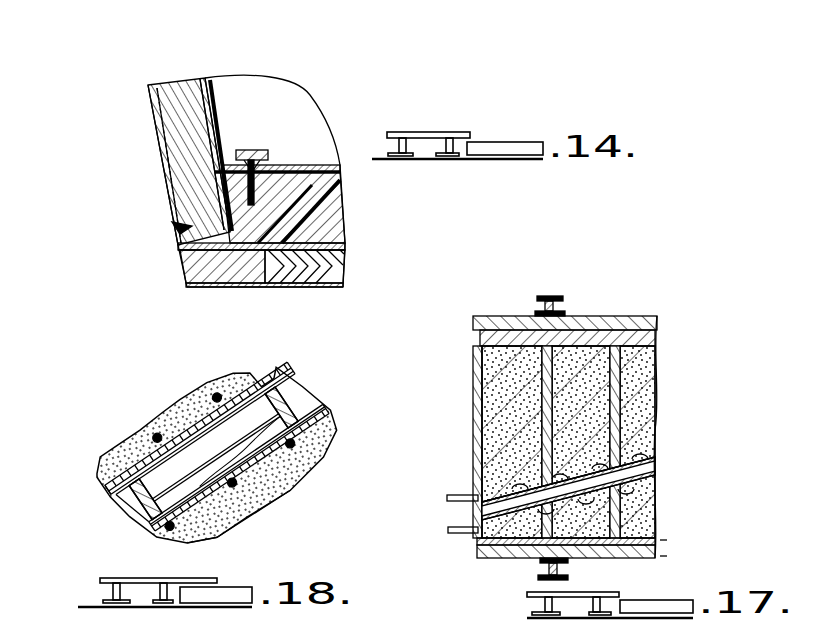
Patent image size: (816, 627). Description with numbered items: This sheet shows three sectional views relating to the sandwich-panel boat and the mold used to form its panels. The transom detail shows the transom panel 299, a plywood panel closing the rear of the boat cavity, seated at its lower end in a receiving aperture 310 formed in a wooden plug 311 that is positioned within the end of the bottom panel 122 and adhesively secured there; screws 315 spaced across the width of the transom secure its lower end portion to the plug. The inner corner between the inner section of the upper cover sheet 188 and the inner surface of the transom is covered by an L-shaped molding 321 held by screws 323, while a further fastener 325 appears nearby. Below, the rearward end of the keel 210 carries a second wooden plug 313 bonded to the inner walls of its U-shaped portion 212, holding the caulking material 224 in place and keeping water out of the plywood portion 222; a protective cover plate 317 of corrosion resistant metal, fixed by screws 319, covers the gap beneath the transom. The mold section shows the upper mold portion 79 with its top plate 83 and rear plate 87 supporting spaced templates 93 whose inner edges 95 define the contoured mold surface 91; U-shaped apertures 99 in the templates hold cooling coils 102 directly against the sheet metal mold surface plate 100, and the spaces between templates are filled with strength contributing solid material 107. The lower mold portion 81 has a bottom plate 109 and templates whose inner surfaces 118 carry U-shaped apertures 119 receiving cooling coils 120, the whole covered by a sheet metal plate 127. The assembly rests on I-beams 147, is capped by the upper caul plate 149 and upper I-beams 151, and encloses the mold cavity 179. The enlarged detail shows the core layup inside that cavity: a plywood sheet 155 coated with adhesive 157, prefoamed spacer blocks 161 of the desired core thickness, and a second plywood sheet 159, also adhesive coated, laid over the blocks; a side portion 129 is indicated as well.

In FIG. 14, the transom panel 299 is at (173, 79).
In FIG. 14, the L-shaped molding 321 is at (213, 92).
In FIG. 14, the screws 323 is at (222, 112).
In FIG. 14, the inner wall skin 325 is at (222, 135).
In FIG. 14, the wooden plug 311 is at (263, 164).
In FIG. 14, the upper cover sheet 188 is at (311, 170).
In FIG. 14, the receiving aperture 310 is at (202, 187).
In FIG. 14, the screws 315 is at (178, 205).
In FIG. 14, the screws 319 is at (197, 233).
In FIG. 14, the protective cover plate 317 is at (183, 249).
In FIG. 14, the wooden plug 313 is at (188, 277).
In FIG. 14, the U-shaped portion 212 is at (291, 291).
In FIG. 14, the bottom panel 122 is at (323, 193).
In FIG. 14, the caulking material 224 is at (347, 252).
In FIG. 14, the plywood portion 222 is at (344, 272).
In FIG. 14, the keel 210 is at (333, 297).
In FIG. 18, the strength contributing solid material 107 is at (117, 447).
In FIG. 18, the cooling coils 102 is at (156, 433).
In FIG. 18, the apertures 99 is at (167, 431).
In FIG. 18, the second plywood sheet 159 is at (236, 393).
In FIG. 18, the sheet metal mold surface plate 100 is at (250, 383).
In FIG. 17, the sheet metal mold surface plate 100 is at (653, 458).
In FIG. 18, the prefoamed spacer blocks 161 is at (287, 380).
In FIG. 18, the sheet of plywood 155 is at (322, 391).
In FIG. 18, the sheet metal plate 127 is at (328, 405).
In FIG. 17, the sheet metal plate 127 is at (503, 515).
In FIG. 18, the U-shaped apertures 119 is at (262, 518).
In FIG. 18, the cooling coils 120 is at (206, 538).
In FIG. 18, the side portion 129 is at (239, 451).
In FIG. 18, the adhesive 157 is at (263, 428).
In FIG. 17, the upper I-beams 151 is at (558, 294).
In FIG. 17, the upper caul plate 149 is at (617, 323).
In FIG. 17, the top plate 83 is at (479, 340).
In FIG. 17, the upper mold portion 79 is at (470, 378).
In FIG. 17, the templates 93 is at (547, 416).
In FIG. 17, the rear plate 87 is at (478, 452).
In FIG. 17, the inner edges 95 is at (592, 474).
In FIG. 17, the mold cavity 179 is at (645, 471).
In FIG. 17, the contoured mold surface 91 is at (503, 513).
In FIG. 17, the lower mold portion 81 is at (470, 545).
In FIG. 17, the bottom plate 109 is at (655, 539).
In FIG. 17, the I-beams 147 is at (543, 578).
In FIG. 17, the inner surfaces 118 is at (585, 506).